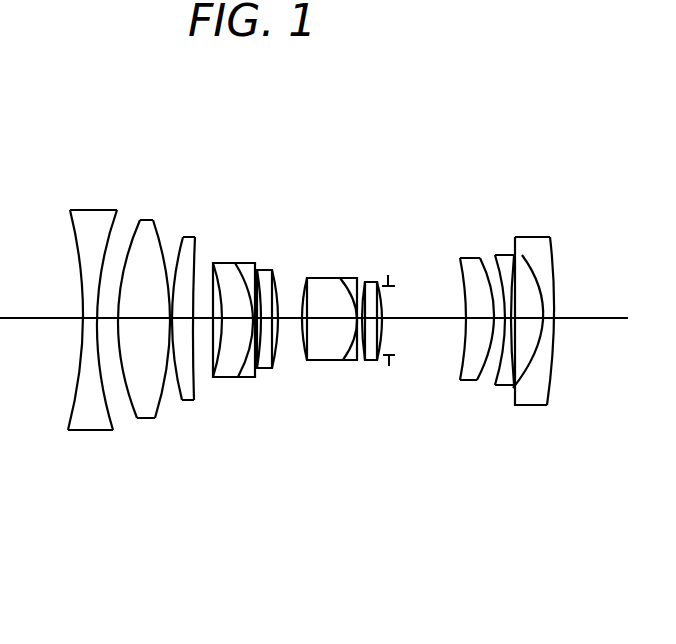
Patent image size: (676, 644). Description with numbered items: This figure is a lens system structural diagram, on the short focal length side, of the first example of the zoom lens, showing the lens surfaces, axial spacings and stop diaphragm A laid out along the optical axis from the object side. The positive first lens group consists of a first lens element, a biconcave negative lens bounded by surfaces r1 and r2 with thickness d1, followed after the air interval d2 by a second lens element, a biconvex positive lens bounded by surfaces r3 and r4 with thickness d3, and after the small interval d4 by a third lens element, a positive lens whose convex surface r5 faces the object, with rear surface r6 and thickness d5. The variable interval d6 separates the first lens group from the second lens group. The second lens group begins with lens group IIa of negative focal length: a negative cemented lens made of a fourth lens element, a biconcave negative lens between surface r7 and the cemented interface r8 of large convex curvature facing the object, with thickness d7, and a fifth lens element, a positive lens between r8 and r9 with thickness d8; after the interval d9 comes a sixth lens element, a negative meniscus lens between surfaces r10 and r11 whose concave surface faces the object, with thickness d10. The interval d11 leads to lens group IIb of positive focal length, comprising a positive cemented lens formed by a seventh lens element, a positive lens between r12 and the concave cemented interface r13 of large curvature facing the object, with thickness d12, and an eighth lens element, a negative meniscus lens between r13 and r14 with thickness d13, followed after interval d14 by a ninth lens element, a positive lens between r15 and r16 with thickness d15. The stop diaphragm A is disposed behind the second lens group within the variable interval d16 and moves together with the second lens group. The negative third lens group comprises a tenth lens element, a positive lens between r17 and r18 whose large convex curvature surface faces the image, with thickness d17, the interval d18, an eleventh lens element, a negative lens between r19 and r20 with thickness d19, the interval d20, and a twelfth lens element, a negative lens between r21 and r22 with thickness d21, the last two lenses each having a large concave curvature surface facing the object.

The stop diaphragm A is at (400, 274).
The object-side surface of first lens element r1 is at (82, 211).
The image-side surface of first lens element r2 is at (117, 228).
The object-side surface of second lens element r3 is at (140, 221).
The image-side surface of second lens element r4 is at (163, 228).
The object-side surface of third lens element r5 is at (183, 238).
The image-side surface of third lens element r6 is at (196, 242).
The object-side surface of fourth lens element r7 is at (214, 263).
The cemented interface of negative cemented lens r8 is at (252, 263).
The image-side surface of fifth lens element r9 is at (258, 270).
The object-side surface of sixth lens element r10 is at (273, 276).
The image-side surface of sixth lens element r11 is at (307, 278).
The object-side surface of seventh lens element r12 is at (340, 278).
The cemented interface of positive cemented lens r13 is at (365, 282).
The image-side surface of eighth lens element r14 is at (378, 283).
The object-side surface of ninth lens element r15 is at (382, 284).
The image-side surface of ninth lens element r16 is at (386, 278).
The object-side surface of tenth lens element r17 is at (460, 262).
The image-side surface of tenth lens element r18 is at (477, 262).
The object-side surface of eleventh lens element r19 is at (497, 262).
The image-side surface of eleventh lens element r20 is at (505, 260).
The object-side surface of twelfth lens element r21 is at (512, 240).
The image-side surface of twelfth lens element r22 is at (550, 258).
The lens thickness of first lens element d1 is at (88, 322).
The lens interval between first and second lens elements d2 is at (109, 322).
The lens thickness of second lens element d3 is at (145, 322).
The lens interval between second and third lens elements d4 is at (172, 322).
The lens thickness of third lens element d5 is at (187, 322).
The variable interval between first and second lens groups d6 is at (207, 322).
The lens thickness of fourth lens element d7 is at (228, 322).
The lens thickness of fifth lens element d8 is at (253, 322).
The lens interval between fifth and sixth lens elements d9 is at (268, 322).
The lens thickness of sixth lens element d10 is at (307, 322).
The lens interval between lens groups IIa and IIb d11 is at (341, 322).
The lens thickness of seventh lens element d12 is at (361, 322).
The lens thickness of eighth lens element d13 is at (375, 322).
The lens interval between eighth and ninth lens elements d14 is at (380, 322).
The lens thickness of ninth lens element d15 is at (422, 322).
The variable interval between second and third lens groups d16 is at (384, 322).
The lens thickness of tenth lens element d17 is at (467, 322).
The lens interval between tenth and eleventh lens elements d18 is at (476, 322).
The lens thickness of eleventh lens element d19 is at (498, 322).
The lens interval between eleventh and twelfth lens elements d20 is at (511, 322).
The lens thickness of twelfth lens element d21 is at (548, 322).